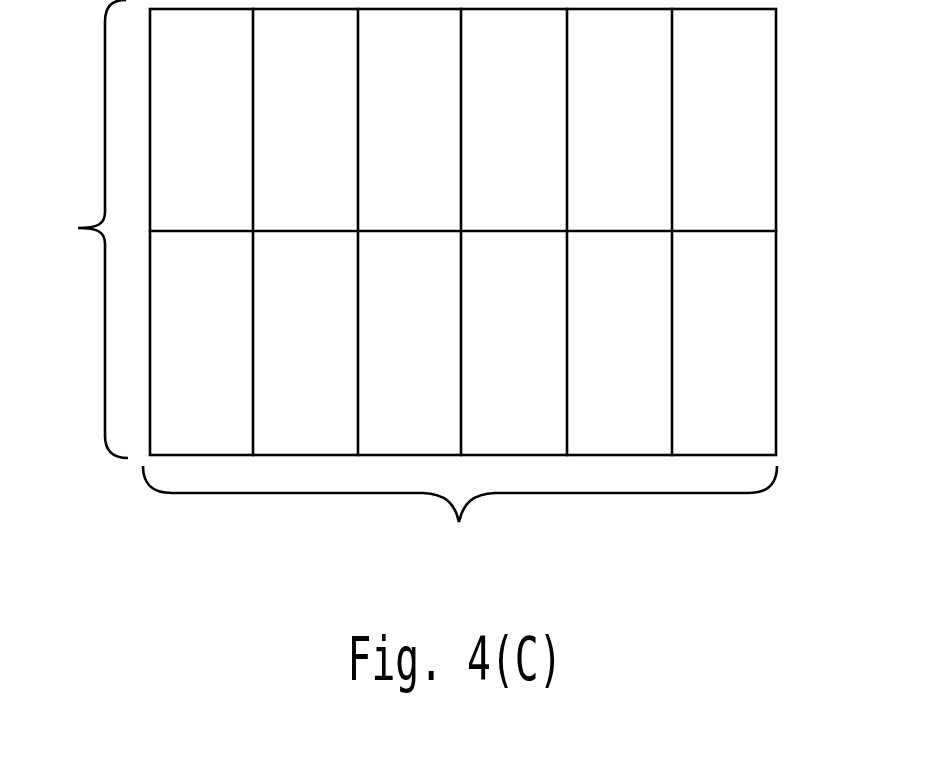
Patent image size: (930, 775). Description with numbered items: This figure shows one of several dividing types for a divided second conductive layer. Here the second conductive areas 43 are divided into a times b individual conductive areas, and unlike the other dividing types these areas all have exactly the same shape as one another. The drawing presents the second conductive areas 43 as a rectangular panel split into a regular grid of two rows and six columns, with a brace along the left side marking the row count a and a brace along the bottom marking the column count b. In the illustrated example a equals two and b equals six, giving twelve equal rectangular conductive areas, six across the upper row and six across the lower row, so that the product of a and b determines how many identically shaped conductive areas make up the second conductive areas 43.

The second conductive areas 43 is at (825, 559).
The number of rows a is at (81, 229).
The number of columns b is at (460, 514).